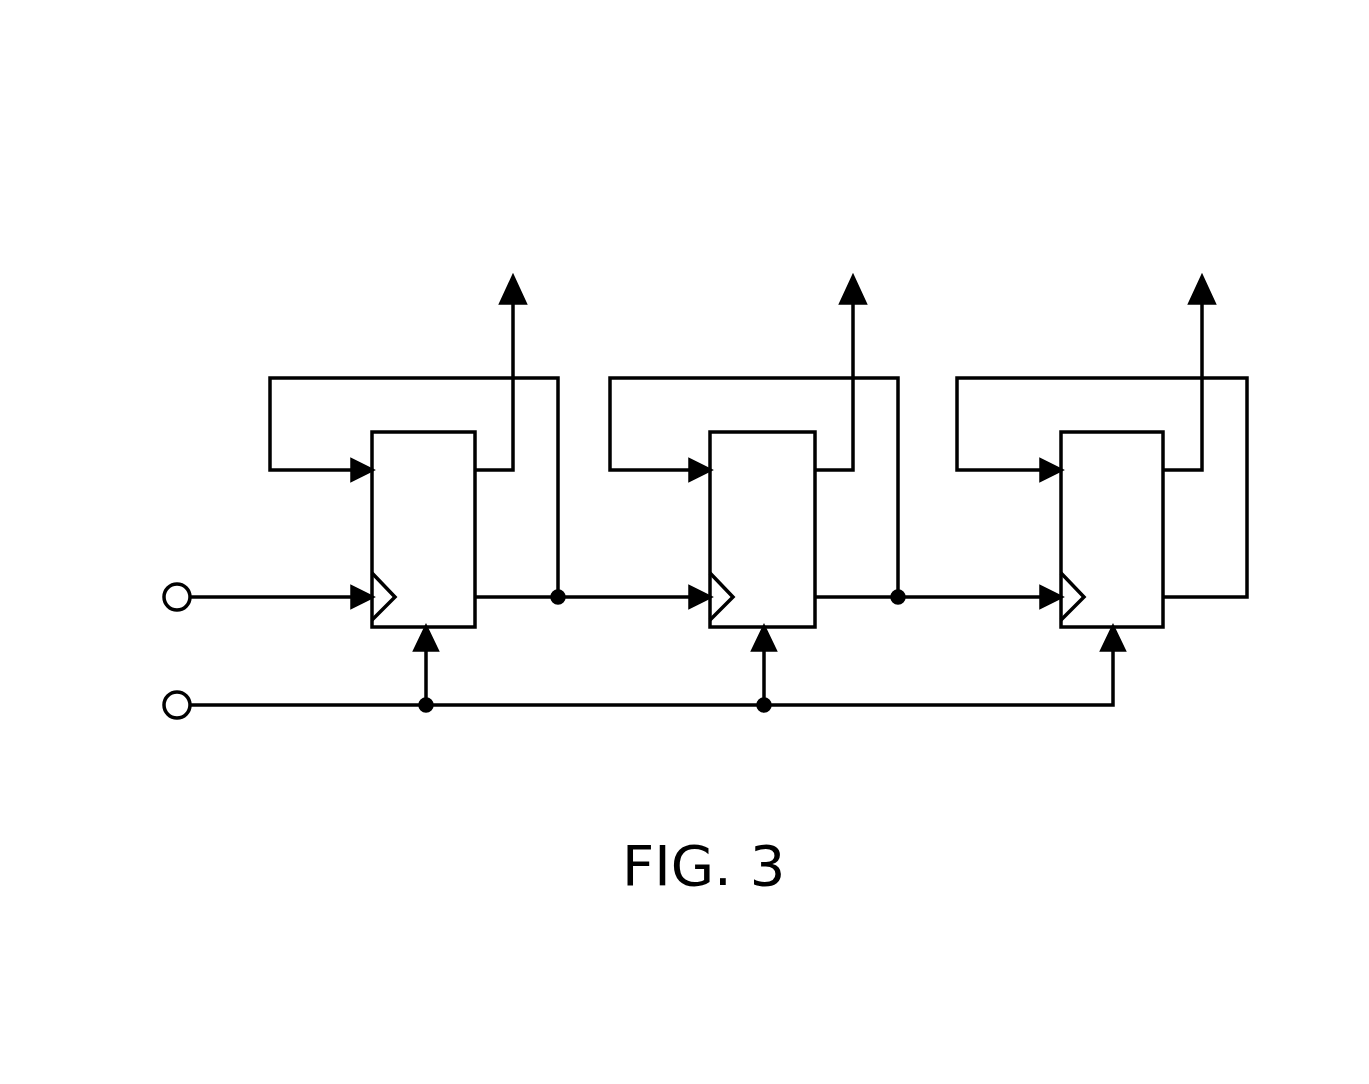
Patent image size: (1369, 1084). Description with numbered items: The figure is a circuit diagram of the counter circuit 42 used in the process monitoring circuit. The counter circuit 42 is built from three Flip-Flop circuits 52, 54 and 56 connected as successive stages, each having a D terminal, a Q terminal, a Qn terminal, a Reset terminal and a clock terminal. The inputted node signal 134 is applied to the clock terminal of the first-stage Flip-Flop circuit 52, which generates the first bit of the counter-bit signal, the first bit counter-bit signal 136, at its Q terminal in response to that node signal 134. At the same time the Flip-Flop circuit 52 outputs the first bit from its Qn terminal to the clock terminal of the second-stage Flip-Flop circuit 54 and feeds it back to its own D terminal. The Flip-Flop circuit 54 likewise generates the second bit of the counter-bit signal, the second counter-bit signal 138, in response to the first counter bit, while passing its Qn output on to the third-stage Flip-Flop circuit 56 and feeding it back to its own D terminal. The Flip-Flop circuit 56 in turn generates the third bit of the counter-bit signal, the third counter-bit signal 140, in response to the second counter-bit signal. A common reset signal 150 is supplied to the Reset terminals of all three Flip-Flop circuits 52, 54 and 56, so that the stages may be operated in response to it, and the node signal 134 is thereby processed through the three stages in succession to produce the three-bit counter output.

The counter circuit 42 is at (1014, 228).
The Flip-Flop circuit 52 is at (450, 627).
The Flip-Flop circuit 54 is at (790, 627).
The Flip-Flop circuit 56 is at (1135, 627).
The node signal 134 is at (268, 597).
The first bit counter-bit signal 136 is at (513, 360).
The second counter-bit signal 138 is at (853, 360).
The third counter-bit signal 140 is at (1202, 358).
The reset signal 150 is at (267, 705).